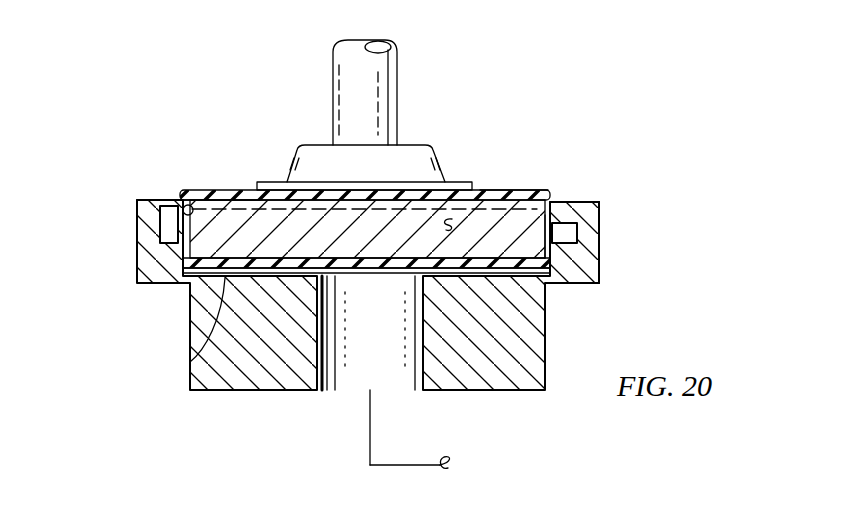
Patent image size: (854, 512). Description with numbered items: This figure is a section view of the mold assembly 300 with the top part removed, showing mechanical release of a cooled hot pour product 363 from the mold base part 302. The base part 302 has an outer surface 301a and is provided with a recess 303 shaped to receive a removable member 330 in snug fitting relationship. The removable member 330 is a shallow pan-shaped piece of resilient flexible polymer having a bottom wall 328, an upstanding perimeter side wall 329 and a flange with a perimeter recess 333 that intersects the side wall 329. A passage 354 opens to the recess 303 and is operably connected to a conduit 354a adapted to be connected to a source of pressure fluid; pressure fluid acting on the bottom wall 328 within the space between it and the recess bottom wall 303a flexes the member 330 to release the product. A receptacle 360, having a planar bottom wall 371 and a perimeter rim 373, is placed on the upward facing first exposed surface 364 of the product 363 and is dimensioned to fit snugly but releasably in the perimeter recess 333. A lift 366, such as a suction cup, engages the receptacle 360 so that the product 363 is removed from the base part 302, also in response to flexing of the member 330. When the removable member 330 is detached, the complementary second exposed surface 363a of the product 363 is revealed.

The sensor assembly 300 is at (706, 190).
The outer surface of housing 301a is at (600, 224).
The base part 302 is at (190, 324).
The recess 303 is at (178, 197).
The recess bottom wall 303a is at (267, 360).
The bottom wall 328 is at (273, 392).
The perimeter side wall 329 is at (190, 362).
The removable member 330 is at (563, 201).
The perimeter recess 333 is at (185, 206).
The passage 354 is at (327, 352).
The conduit 354a is at (435, 467).
The receptacle 360 is at (546, 190).
The hot pour product 363 is at (478, 193).
The second exposed surface 363a is at (540, 214).
The first exposed surface 364 is at (200, 192).
The lift 366 is at (417, 146).
The planar bottom wall 371 is at (510, 190).
The perimeter rim 373 is at (600, 278).